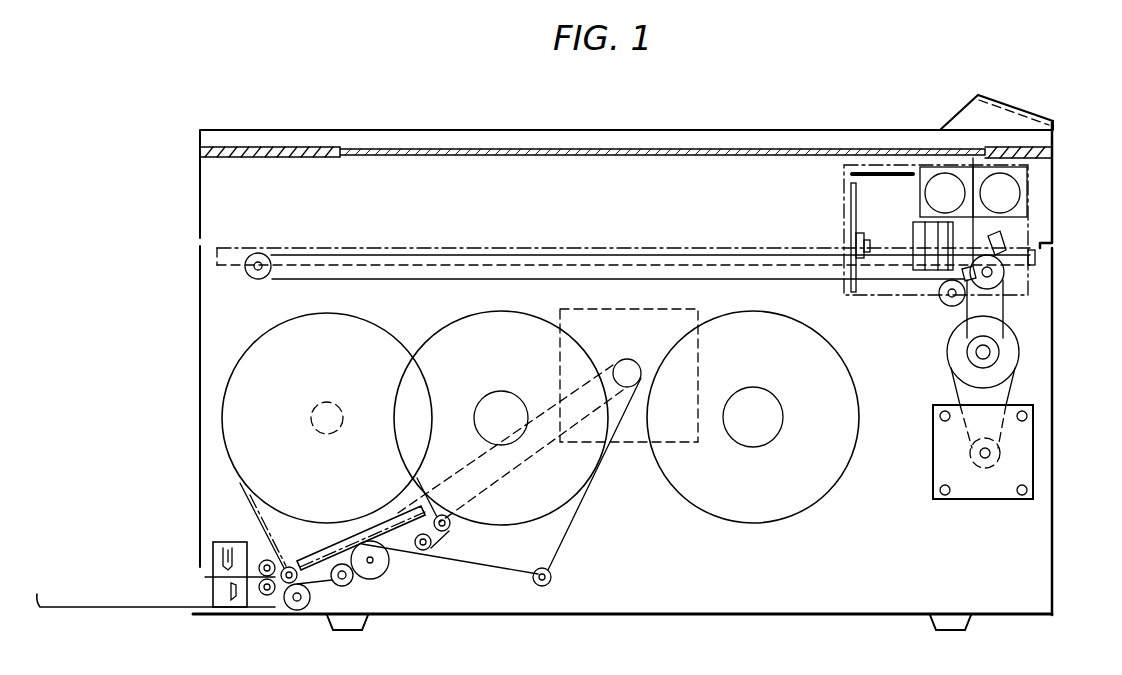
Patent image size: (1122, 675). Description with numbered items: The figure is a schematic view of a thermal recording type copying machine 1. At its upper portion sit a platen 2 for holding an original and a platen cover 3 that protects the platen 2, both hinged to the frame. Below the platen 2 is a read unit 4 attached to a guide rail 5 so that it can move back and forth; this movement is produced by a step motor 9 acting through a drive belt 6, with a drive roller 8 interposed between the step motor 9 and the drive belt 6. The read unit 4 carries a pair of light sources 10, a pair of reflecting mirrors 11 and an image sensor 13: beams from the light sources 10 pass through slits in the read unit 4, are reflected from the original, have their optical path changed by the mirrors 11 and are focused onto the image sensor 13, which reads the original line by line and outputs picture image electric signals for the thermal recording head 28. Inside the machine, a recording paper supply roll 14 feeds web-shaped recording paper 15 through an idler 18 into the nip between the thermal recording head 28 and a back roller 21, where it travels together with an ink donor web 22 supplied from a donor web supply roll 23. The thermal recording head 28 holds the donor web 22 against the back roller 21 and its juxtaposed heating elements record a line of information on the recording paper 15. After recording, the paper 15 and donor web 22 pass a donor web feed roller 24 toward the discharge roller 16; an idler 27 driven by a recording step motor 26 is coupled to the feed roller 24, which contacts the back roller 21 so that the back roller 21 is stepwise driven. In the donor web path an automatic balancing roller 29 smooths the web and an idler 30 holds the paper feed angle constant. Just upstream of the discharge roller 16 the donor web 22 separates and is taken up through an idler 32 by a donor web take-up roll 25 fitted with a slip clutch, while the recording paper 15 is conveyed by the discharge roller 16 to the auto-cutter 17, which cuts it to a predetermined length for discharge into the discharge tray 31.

The copying machine 1 is at (1030, 89).
The platen 2 is at (470, 148).
The platen cover 3 is at (966, 118).
The read unit 4 is at (1032, 232).
The guide rail 5 is at (1036, 262).
The drive belt 6 is at (1002, 310).
The drive roller 8 is at (1019, 348).
The step motor 9 is at (1022, 448).
The light sources 10 is at (934, 186).
The reflecting mirrors 11 is at (1003, 250).
The image sensor 13 is at (860, 236).
The recording paper supply roll 14 is at (803, 324).
The web-shaped recording paper 15 is at (585, 522).
The discharge roller 16 is at (263, 560).
The auto-cutter 17 is at (211, 548).
The idler 18 is at (543, 587).
The back roller 21 is at (388, 578).
The ink donor web 22 is at (445, 535).
The donor web supply roll 23 is at (462, 318).
The donor web feed roller 24 is at (348, 588).
The donor web take-up roll 25 is at (296, 318).
The recording step motor 26 is at (690, 310).
The idler 27 is at (297, 611).
The thermal recording head 28 is at (329, 548).
The automatic balancing roller 29 is at (450, 530).
The idler 30 is at (423, 552).
The discharge tray 31 is at (128, 607).
The idler 32 is at (289, 566).